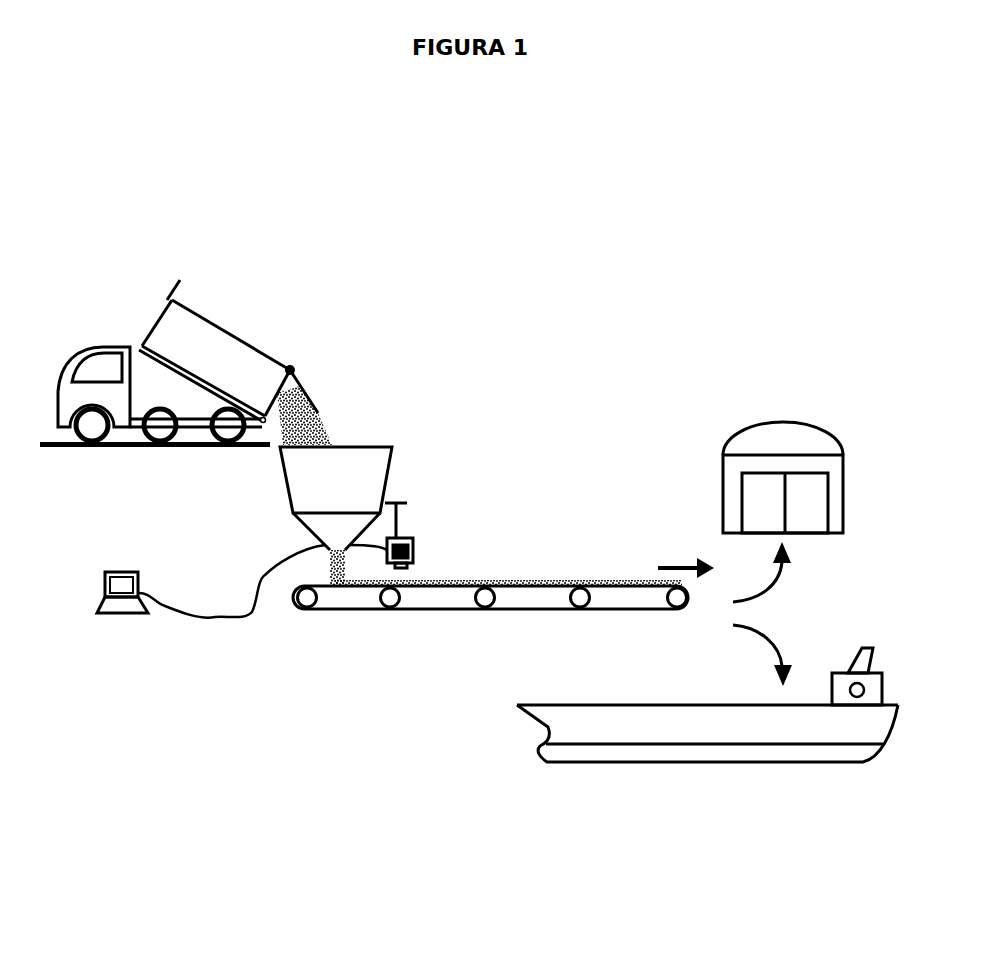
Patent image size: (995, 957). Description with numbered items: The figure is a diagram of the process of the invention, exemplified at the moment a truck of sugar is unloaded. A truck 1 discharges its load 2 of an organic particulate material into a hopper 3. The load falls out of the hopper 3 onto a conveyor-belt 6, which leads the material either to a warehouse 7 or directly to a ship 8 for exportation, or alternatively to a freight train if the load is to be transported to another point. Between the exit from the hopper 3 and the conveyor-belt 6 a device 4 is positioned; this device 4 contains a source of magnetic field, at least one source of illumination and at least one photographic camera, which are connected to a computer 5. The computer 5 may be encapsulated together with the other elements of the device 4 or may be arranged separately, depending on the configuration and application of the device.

The truck 1 is at (113, 328).
The load 2 is at (328, 407).
The hopper 3 is at (395, 465).
The device 4 is at (420, 537).
The computer 5 is at (105, 567).
The conveyor-belt 6 is at (395, 615).
The warehouse 7 is at (787, 412).
The ship 8 is at (715, 783).